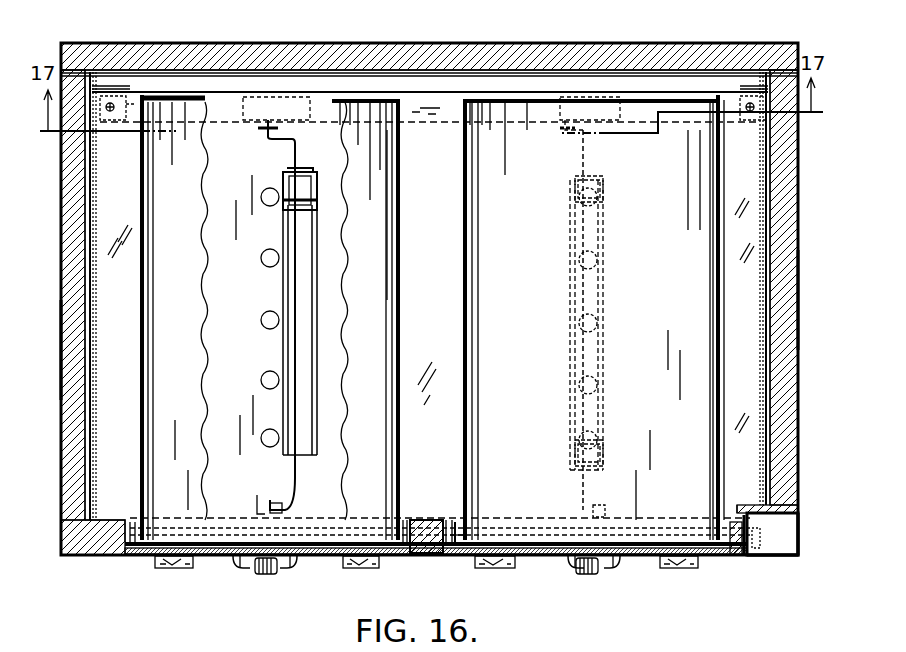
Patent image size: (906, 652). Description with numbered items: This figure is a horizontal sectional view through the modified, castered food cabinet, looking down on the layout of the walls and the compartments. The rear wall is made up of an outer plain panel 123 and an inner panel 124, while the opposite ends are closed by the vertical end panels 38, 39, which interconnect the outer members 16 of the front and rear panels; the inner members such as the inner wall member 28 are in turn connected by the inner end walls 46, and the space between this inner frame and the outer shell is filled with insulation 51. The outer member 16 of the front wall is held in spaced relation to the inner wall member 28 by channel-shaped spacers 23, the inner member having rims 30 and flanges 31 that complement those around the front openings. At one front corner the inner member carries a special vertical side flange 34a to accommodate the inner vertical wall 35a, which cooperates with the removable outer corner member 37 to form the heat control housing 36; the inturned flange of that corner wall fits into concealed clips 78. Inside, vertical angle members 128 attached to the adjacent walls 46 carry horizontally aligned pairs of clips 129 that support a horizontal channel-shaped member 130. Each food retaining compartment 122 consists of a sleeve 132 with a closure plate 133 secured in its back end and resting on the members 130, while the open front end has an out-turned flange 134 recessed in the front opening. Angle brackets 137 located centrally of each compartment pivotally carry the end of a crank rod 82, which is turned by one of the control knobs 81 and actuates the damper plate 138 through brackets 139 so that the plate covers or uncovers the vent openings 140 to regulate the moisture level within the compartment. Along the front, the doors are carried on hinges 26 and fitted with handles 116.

The outer plain panel 123 is at (429, 280).
The insulation 51 is at (603, 45).
The vertical angle members 128 is at (105, 87).
The inner panel 124 is at (412, 74).
The clips 129 is at (120, 124).
The angle brackets 137 is at (255, 124).
The crank rod 82 is at (293, 152).
The closure plate 133 is at (375, 122).
The horizontal channel-shaped member 130 is at (446, 124).
The brackets 139 is at (317, 199).
The damper plate 138 is at (318, 300).
The vent openings 140 is at (265, 315).
The inner end walls 46 is at (96, 305).
The vertical end panel 38 is at (62, 352).
The vertical end panel 39 is at (798, 302).
The sleeve 132 is at (145, 383).
The food retaining compartments 122 is at (663, 416).
The rims 30 is at (448, 518).
The inner wall member 28 is at (430, 518).
The flanges 31 is at (462, 525).
The channel-shaped spacers 23 is at (466, 536).
The outer member 16 is at (428, 556).
The special vertical side flange 34a is at (745, 506).
The inner vertical wall 35a is at (772, 534).
The clips 78 is at (755, 546).
The outer corner member 37 is at (800, 530).
The heat control housing 36 is at (781, 566).
The out-turned flange 134 is at (135, 556).
The hinges 26 is at (170, 576).
The handles 116 is at (262, 568).
The control knobs 81 is at (270, 576).